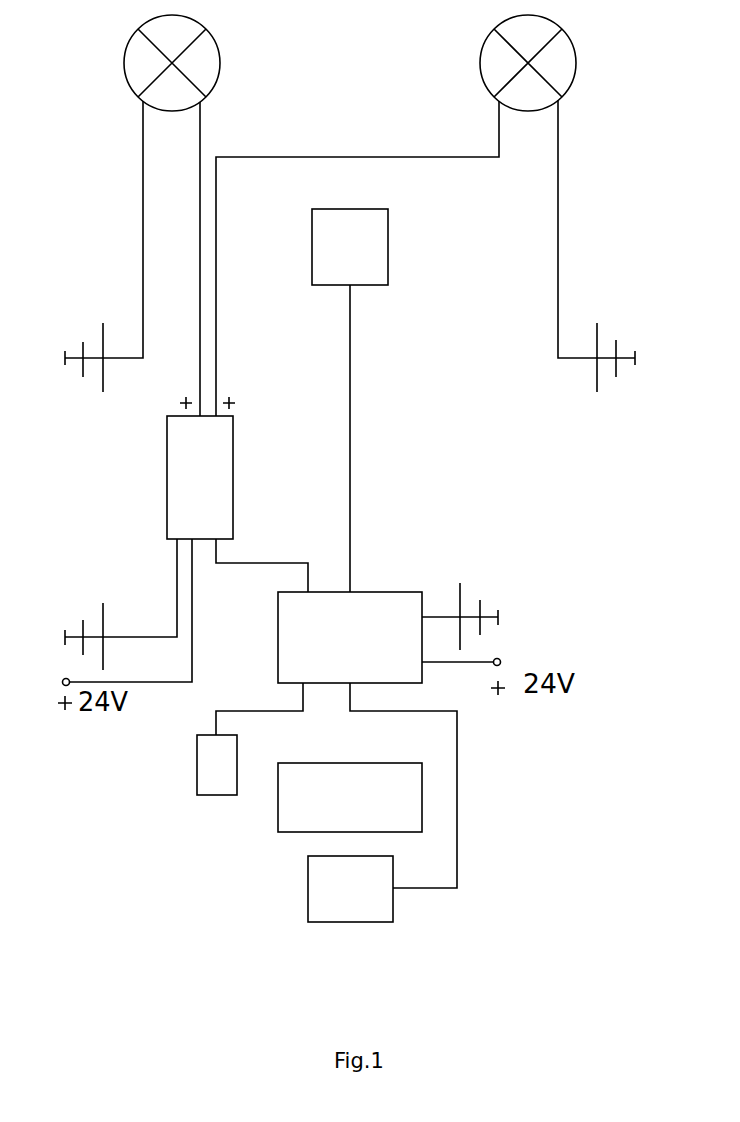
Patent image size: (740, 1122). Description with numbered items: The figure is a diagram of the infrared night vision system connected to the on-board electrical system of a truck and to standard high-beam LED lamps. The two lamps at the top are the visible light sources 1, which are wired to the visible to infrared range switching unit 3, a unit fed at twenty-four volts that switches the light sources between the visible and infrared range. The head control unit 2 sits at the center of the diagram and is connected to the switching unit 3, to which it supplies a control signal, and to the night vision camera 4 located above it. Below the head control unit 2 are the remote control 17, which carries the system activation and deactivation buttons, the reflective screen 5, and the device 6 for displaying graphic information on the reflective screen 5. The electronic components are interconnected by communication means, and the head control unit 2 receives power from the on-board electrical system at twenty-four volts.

The visible light sources 1 is at (203, 55).
The head control unit 2 is at (387, 608).
The visible to infrared range switching unit 3 is at (182, 495).
The night vision camera 4 is at (366, 276).
The reflective screen 5 is at (318, 808).
The device for displaying graphic information 6 is at (340, 902).
The remote control 17 is at (215, 760).